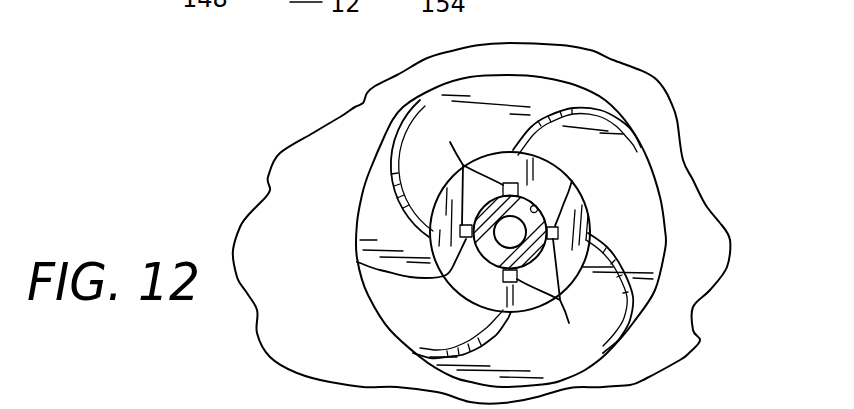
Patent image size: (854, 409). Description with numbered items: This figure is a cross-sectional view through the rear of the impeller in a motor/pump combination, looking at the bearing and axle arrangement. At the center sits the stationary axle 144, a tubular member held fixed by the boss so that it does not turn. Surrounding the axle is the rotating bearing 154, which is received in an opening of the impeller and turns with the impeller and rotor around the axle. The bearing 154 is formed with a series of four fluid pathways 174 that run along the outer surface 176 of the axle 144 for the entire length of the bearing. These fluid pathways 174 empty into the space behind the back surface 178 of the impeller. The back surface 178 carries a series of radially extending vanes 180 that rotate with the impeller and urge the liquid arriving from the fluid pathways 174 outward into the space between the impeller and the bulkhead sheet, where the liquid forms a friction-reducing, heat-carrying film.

The stationary axle 144 is at (357, 257).
The rotating bearing 154 is at (548, 189).
The fluid pathways 174 is at (472, 239).
The outer surface of the axle 176 is at (578, 204).
The back surface of impeller 178 is at (530, 93).
The radially extending vanes 180 is at (607, 110).